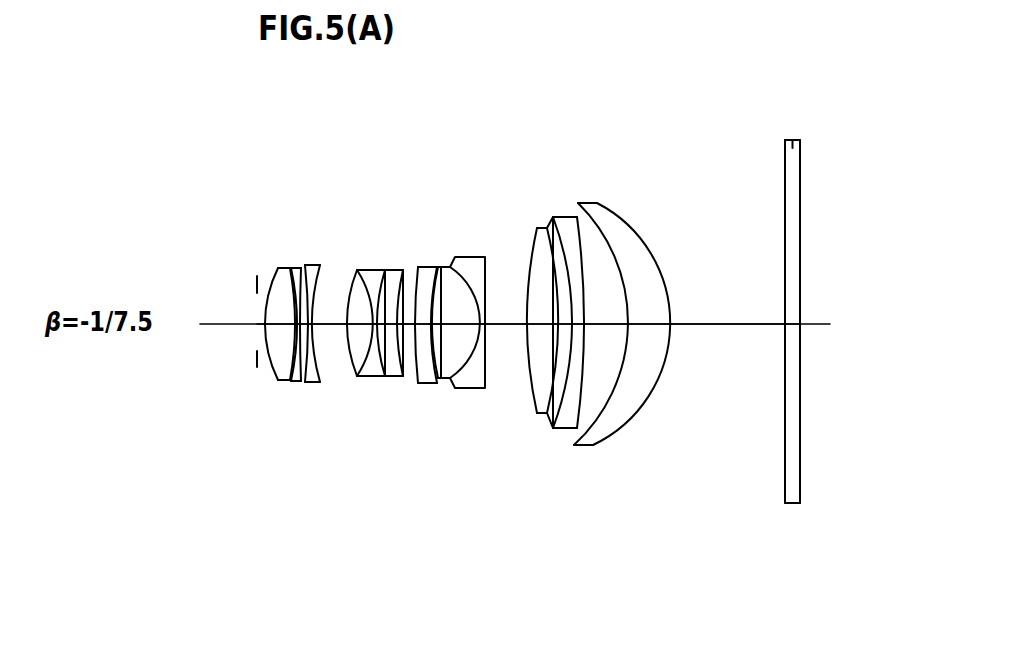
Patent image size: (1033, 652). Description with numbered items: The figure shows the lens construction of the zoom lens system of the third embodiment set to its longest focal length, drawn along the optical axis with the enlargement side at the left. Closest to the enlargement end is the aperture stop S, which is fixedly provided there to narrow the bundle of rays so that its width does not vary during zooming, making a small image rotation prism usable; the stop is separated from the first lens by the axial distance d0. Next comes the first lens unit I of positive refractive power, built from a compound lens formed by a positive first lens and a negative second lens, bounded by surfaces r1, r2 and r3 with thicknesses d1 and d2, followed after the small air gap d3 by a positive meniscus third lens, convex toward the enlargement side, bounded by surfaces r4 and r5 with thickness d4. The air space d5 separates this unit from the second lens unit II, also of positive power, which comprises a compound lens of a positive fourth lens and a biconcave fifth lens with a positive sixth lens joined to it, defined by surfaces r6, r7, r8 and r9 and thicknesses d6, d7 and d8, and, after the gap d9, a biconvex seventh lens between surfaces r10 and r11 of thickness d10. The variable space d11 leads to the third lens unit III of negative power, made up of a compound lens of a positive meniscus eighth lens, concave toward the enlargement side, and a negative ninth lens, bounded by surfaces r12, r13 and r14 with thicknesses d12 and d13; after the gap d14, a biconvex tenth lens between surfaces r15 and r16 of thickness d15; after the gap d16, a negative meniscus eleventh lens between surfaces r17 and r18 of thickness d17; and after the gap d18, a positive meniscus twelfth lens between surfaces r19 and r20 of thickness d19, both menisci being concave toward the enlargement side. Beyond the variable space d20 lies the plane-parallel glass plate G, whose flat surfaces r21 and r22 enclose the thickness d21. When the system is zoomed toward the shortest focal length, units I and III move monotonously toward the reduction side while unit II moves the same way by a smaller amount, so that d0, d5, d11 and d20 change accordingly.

The aperture stop S is at (257, 278).
The glass plate G is at (792, 141).
The first lens unit I is at (253, 570).
The second lens unit II is at (337, 570).
The third lens unit III is at (673, 570).
The first refracting surface r1 is at (275, 272).
The second refracting surface r2 is at (285, 268).
The third refracting surface r3 is at (292, 267).
The fourth refracting surface r4 is at (301, 267).
The fifth refracting surface r5 is at (308, 264).
The sixth refracting surface r6 is at (319, 264).
The seventh refracting surface r7 is at (350, 267).
The eighth refracting surface r8 is at (357, 269).
The ninth refracting surface r9 is at (381, 269).
The tenth refracting surface r10 is at (402, 269).
The eleventh refracting surface r11 is at (420, 266).
The twelfth refracting surface r12 is at (440, 266).
The thirteenth refracting surface r13 is at (463, 257).
The fourteenth refracting surface r14 is at (489, 262).
The fifteenth refracting surface r15 is at (531, 226).
The sixteenth refracting surface r16 is at (543, 228).
The seventeenth refracting surface r17 is at (555, 216).
The eighteenth refracting surface r18 is at (577, 216).
The nineteenth refracting surface r19 is at (597, 203).
The twentieth refracting surface r20 is at (624, 218).
The twenty-first refracting surface r21 is at (785, 165).
The twenty-second refracting surface r22 is at (800, 160).
The axial distance from stop to first lens d0 is at (264, 325).
The axial thickness of first lens d1 is at (276, 352).
The axial thickness of second lens d2 is at (292, 381).
The axial air gap d3 is at (299, 381).
The axial thickness of third lens d4 is at (306, 382).
The variable air gap between first and second units d5 is at (314, 382).
The axial thickness of fourth lens d6 is at (337, 380).
The axial thickness of fifth lens d7 is at (366, 377).
The axial thickness of sixth lens d8 is at (387, 377).
The axial air gap d9 is at (395, 377).
The axial thickness of seventh lens d10 is at (408, 377).
The variable air gap between second and third units d11 is at (425, 384).
The axial thickness of eighth lens d12 is at (445, 380).
The axial thickness of ninth lens d13 is at (492, 390).
The axial air gap d14 is at (535, 414).
The axial thickness of tenth lens d15 is at (545, 414).
The axial air gap d16 is at (557, 428).
The axial thickness of eleventh lens d17 is at (575, 446).
The axial air gap d18 is at (607, 327).
The axial thickness of twelfth lens d19 is at (651, 327).
The variable air gap to glass plate d20 is at (722, 326).
The axial thickness of glass plate d21 is at (800, 330).